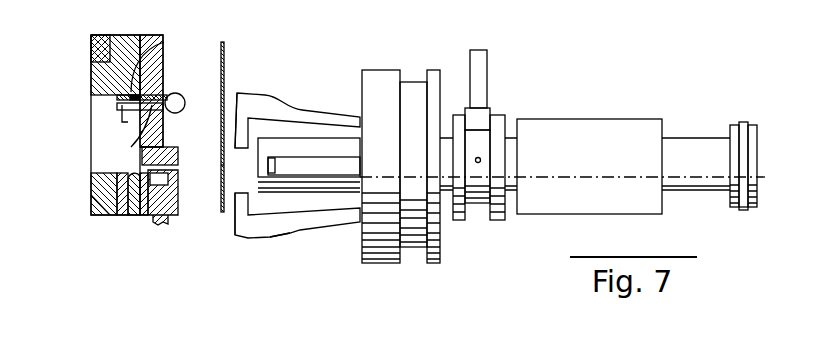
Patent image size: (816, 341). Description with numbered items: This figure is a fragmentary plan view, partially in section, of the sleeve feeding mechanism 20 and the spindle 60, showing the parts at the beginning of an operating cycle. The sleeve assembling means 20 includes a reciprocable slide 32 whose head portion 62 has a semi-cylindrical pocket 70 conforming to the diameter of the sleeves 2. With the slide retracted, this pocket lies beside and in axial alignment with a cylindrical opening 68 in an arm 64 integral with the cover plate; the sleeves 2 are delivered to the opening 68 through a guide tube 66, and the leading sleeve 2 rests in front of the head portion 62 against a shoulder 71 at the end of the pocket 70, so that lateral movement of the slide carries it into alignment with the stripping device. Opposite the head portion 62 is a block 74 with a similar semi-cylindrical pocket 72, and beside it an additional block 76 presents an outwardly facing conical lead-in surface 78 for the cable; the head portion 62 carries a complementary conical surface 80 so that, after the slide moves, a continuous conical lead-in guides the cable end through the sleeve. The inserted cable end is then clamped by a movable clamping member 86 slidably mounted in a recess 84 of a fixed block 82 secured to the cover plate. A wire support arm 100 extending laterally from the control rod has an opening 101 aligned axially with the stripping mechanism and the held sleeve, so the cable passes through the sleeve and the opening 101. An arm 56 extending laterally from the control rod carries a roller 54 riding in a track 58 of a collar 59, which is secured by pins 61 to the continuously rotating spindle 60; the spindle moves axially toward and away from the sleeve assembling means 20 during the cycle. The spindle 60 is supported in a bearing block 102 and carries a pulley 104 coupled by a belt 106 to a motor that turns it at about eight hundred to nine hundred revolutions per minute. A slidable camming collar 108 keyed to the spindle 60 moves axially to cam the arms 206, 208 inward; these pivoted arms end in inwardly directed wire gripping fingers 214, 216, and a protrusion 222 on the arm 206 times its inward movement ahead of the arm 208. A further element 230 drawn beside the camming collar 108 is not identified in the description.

The sleeve 2 is at (115, 106).
The sleeve assembling means 20 is at (70, 204).
The reciprocable slide 32 is at (120, 50).
The roller 54 is at (472, 110).
The arm 56 is at (477, 58).
The track 58 is at (490, 140).
The collar 59 is at (497, 115).
The spindle 60 is at (310, 190).
The pins 61 is at (481, 160).
The head portion 62 is at (97, 75).
The arm 64 is at (157, 63).
The guide tube 66 is at (182, 96).
The cylindrical opening 68 is at (131, 147).
The semi-cylindrical pocket 70 is at (164, 42).
The shoulder 71 is at (128, 118).
The semi-cylindrical pocket 72 is at (131, 215).
The block 74 is at (124, 215).
The additional block 76 is at (100, 205).
The conical lead-in surface 78 is at (97, 178).
The conical surface 80 is at (98, 96).
The fixed block 82 is at (173, 148).
The recess 84 is at (165, 194).
The movable clamping member 86 is at (163, 224).
The wire support arm 100 is at (225, 62).
The opening 101 is at (220, 166).
The bearing block 102 is at (608, 126).
The pulley 104 is at (755, 130).
The belt 106 is at (745, 206).
The camming collar 108 is at (384, 262).
The arm 206 is at (270, 238).
The arm 208 is at (305, 112).
The wire gripping finger 214 is at (240, 215).
The wire gripping finger 216 is at (245, 95).
The protrusion 222 is at (300, 232).
The disc 230 is at (428, 95).